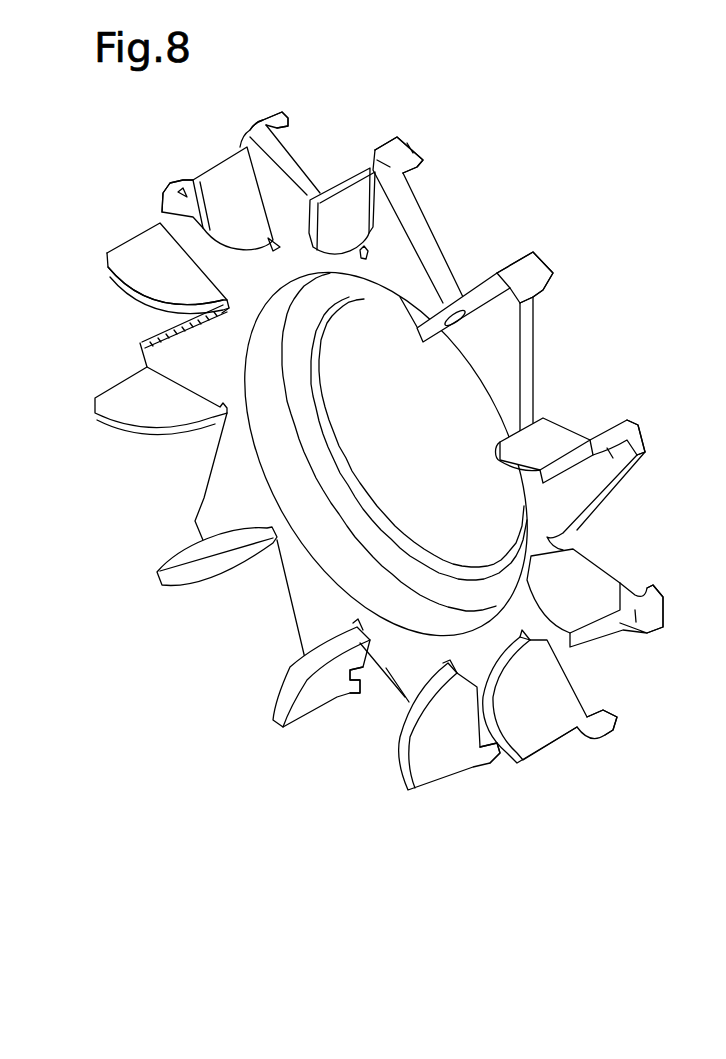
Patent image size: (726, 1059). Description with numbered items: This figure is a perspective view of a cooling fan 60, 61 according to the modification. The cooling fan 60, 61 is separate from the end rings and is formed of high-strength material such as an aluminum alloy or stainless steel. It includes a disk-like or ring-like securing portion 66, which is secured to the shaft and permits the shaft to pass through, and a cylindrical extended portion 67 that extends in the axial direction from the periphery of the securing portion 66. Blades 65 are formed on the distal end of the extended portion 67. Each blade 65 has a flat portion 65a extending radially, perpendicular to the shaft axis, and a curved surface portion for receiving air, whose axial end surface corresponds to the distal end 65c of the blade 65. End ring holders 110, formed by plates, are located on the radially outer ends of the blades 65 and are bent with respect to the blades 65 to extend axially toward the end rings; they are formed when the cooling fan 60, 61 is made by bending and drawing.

The cooling fan 60 is at (585, 108).
The cooling fan 61 is at (381, 445).
The blade 65 is at (133, 242).
The flat portion 65a is at (403, 223).
The distal end 65c is at (122, 278).
The securing portion 66 is at (312, 438).
The extended portion 67 is at (393, 588).
The end ring holder 110 is at (177, 190).